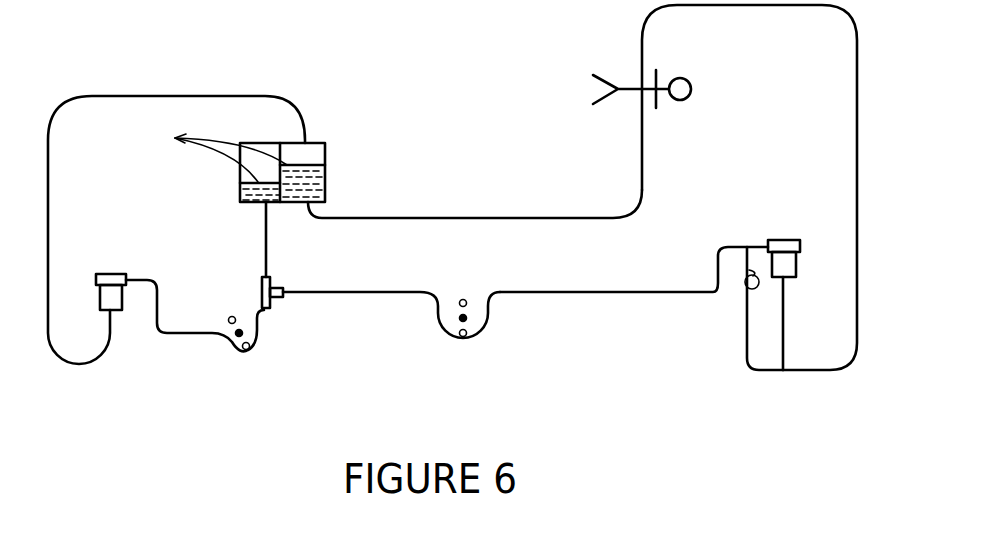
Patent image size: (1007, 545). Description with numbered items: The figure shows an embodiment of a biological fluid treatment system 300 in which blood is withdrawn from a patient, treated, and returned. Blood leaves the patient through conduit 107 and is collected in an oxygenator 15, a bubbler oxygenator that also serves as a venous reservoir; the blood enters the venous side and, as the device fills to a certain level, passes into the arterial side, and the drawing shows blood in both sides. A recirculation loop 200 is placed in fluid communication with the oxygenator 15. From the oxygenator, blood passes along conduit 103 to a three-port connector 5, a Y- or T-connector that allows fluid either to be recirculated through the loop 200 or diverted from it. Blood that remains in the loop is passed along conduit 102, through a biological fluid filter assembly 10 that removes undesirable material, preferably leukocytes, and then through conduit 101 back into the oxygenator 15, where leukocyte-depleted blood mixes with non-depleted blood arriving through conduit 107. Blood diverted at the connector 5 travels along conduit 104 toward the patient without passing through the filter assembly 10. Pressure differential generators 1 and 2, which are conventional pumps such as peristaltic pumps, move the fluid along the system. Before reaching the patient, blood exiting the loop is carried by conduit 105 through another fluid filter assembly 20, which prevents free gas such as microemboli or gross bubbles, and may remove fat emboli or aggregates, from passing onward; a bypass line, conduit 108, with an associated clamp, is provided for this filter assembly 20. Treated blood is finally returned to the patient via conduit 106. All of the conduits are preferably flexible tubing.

The pressure differential generator 1 is at (463, 298).
The pressure differential generator 2 is at (235, 317).
The connector 5 is at (271, 284).
The biological fluid filter assembly 10 is at (112, 273).
The oxygenator 15 is at (327, 150).
The fluid filter assembly 20 is at (786, 239).
The conduit 101 is at (212, 95).
The conduit 102 is at (188, 335).
The conduit 103 is at (265, 222).
The conduit 104 is at (360, 295).
The conduit 105 is at (714, 297).
The conduit 106 is at (857, 135).
The conduit 107 is at (550, 218).
The conduit 108 is at (760, 371).
The recirculation loop 200 is at (217, 291).
The biological fluid treatment system 300 is at (813, 453).